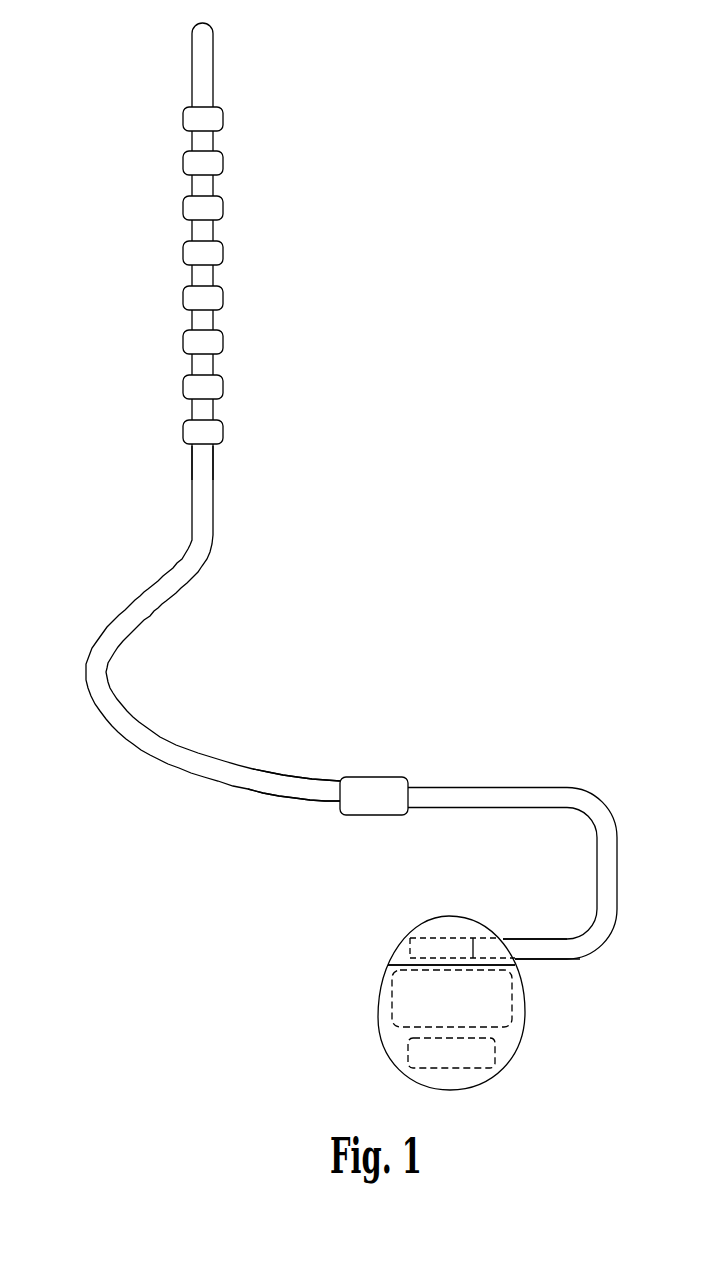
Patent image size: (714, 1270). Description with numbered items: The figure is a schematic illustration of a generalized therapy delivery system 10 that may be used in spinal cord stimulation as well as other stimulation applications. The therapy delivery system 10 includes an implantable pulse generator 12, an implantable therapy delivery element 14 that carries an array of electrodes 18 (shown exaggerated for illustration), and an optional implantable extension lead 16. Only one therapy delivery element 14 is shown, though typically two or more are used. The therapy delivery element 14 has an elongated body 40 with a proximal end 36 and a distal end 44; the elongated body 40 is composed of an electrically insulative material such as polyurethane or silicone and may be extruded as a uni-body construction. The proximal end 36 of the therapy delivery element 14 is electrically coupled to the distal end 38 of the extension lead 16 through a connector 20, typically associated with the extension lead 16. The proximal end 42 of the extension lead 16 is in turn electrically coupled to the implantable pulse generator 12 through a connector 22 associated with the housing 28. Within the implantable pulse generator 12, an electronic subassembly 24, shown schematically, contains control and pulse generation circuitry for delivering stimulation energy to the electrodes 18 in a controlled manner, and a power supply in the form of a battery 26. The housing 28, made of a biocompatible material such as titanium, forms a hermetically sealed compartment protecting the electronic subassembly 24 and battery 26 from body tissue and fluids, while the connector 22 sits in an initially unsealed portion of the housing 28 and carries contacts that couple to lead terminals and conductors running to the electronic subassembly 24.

The therapy delivery system 10 is at (351, 104).
The implantable pulse generator 12 is at (388, 960).
The implantable therapy delivery element 14 is at (213, 508).
The implantable extension lead 16 is at (480, 787).
The electrodes 18 is at (237, 107).
The connector 20 is at (375, 777).
The connector 22 is at (410, 940).
The electronic subassembly 24 is at (515, 1013).
The battery 26 is at (499, 1065).
The housing 28 is at (445, 916).
The proximal end 36 is at (266, 778).
The distal end 38 is at (430, 787).
The elongated body 40 is at (87, 678).
The proximal end 42 is at (536, 939).
The distal end 44 is at (191, 450).